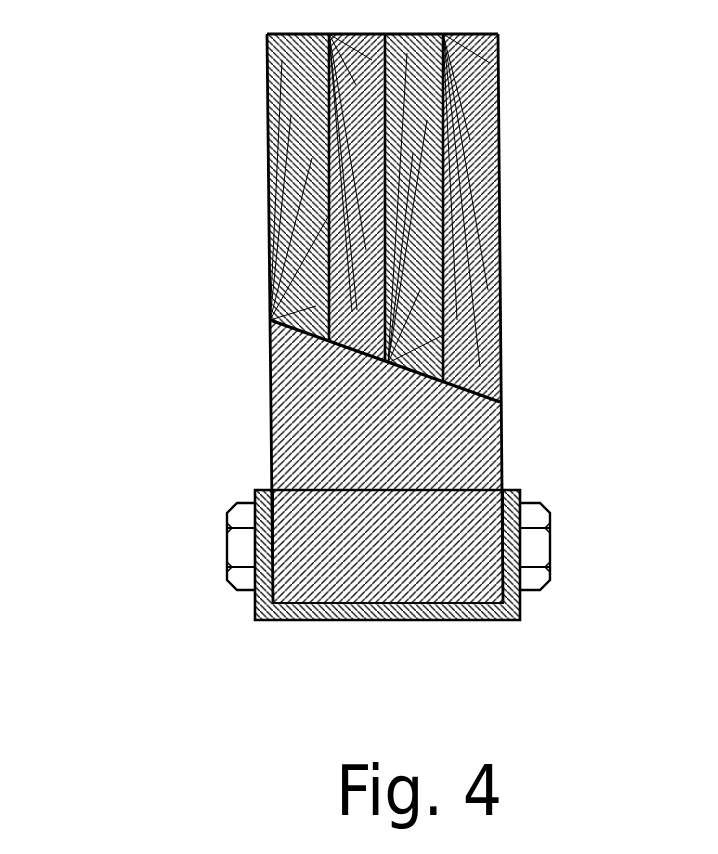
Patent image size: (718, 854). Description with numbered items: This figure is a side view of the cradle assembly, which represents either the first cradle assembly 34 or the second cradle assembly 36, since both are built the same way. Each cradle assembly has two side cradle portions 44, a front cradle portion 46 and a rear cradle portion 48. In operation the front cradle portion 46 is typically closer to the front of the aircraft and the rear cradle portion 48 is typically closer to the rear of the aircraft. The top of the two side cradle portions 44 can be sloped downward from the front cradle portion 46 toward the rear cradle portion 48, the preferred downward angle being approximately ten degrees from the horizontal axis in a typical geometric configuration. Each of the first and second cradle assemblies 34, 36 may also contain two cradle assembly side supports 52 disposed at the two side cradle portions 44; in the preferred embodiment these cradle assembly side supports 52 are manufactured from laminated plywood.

The first cradle assembly 34 is at (205, 206).
The second cradle assembly 36 is at (388, 546).
The side cradle portion 44 is at (362, 522).
The front cradle portion 46 is at (270, 432).
The rear cradle portion 48 is at (503, 459).
The cradle assembly side support 52 is at (500, 236).